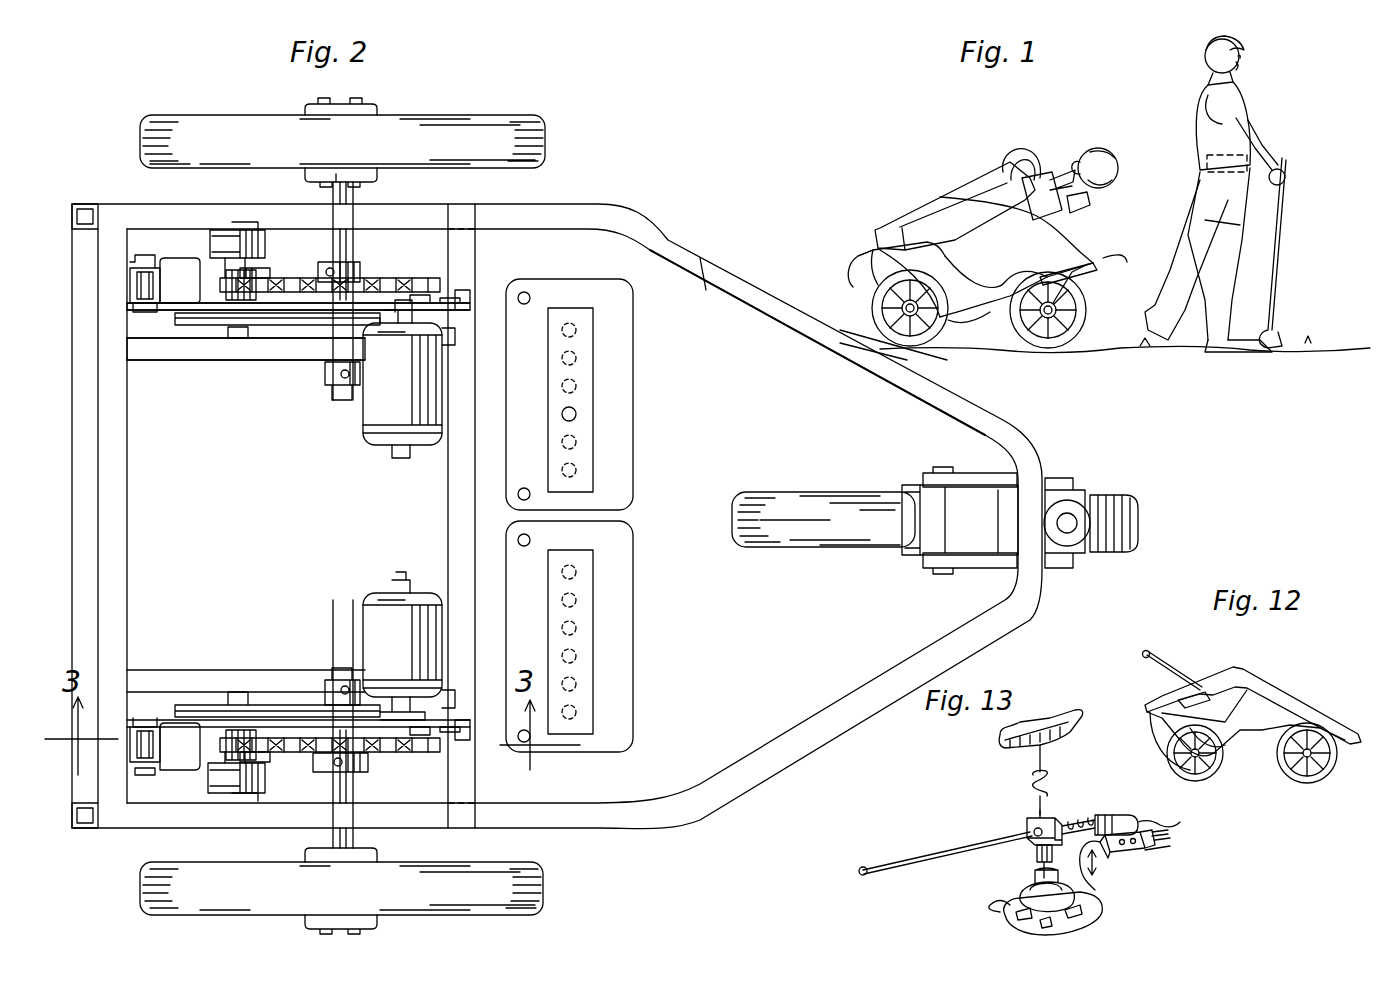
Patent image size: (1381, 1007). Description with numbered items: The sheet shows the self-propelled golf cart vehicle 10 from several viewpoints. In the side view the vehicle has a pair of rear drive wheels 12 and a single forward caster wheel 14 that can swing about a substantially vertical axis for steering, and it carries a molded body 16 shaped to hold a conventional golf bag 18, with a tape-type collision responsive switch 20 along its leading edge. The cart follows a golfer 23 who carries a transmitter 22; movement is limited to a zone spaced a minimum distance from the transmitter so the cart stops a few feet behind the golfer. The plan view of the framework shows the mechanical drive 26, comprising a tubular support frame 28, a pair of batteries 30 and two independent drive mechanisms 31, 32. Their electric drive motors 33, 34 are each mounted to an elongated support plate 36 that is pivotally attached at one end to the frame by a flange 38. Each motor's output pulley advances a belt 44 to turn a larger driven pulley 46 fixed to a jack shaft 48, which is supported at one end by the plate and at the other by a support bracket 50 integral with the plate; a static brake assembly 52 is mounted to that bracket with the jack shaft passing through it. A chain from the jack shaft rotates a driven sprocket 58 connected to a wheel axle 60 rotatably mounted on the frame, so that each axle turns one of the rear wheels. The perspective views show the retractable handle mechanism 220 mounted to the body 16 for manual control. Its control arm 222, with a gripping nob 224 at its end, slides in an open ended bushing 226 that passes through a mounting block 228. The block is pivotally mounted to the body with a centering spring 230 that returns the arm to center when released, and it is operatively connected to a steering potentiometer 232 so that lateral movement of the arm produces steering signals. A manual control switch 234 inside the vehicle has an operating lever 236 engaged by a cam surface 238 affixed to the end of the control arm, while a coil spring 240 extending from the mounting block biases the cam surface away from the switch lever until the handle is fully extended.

In FIG. 1, the self-propelled golf cart vehicle 10 is at (931, 182).
In FIG. 2, the rear drive wheels 12 is at (452, 128).
In FIG. 1, the rear drive wheels 12 is at (930, 342).
In FIG. 2, the forward caster wheel 14 is at (780, 530).
In FIG. 1, the forward caster wheel 14 is at (1040, 347).
In FIG. 1, the body 16 is at (1058, 226).
In FIG. 12, the body 16 is at (1298, 698).
In FIG. 13, the body 16 is at (1002, 735).
In FIG. 1, the golf bag 18 is at (1040, 176).
In FIG. 1, the collision responsive switch 20 is at (1088, 270).
In FIG. 1, the transmitter 22 is at (1207, 165).
In FIG. 1, the golfer 23 is at (1180, 97).
In FIG. 2, the mechanical drive 26 is at (653, 191).
In FIG. 2, the tubular support frame 28 is at (817, 342).
In FIG. 2, the batteries 30 is at (620, 540).
In FIG. 2, the drive mechanism 31 is at (347, 431).
In FIG. 2, the drive mechanism 32 is at (338, 570).
In FIG. 2, the electric drive motor 33 is at (422, 445).
In FIG. 2, the electric drive motor 34 is at (418, 593).
In FIG. 2, the elongated support plate 36 is at (170, 310).
In FIG. 2, the flange 38 is at (130, 271).
In FIG. 2, the belt 44 is at (318, 318).
In FIG. 2, the driven pulley 46 is at (215, 325).
In FIG. 2, the jack shaft 48 is at (250, 275).
In FIG. 2, the support bracket 50 is at (180, 266).
In FIG. 2, the static brake assembly 52 is at (265, 246).
In FIG. 2, the driven sprocket 58 is at (375, 280).
In FIG. 2, the wheel axle 60 is at (333, 192).
In FIG. 13, the retractable handle mechanism 220 is at (980, 806).
In FIG. 12, the control arm 222 is at (1210, 646).
In FIG. 13, the control arm 222 is at (950, 880).
In FIG. 12, the gripping nob 224 is at (1143, 658).
In FIG. 13, the gripping nob 224 is at (831, 884).
In FIG. 13, the open ended bushing 226 is at (1035, 850).
In FIG. 13, the mounting block 228 is at (1028, 820).
In FIG. 13, the centering spring 230 is at (1028, 775).
In FIG. 13, the steering potentiometer 232 is at (1075, 898).
In FIG. 13, the manual control switch 234 is at (1140, 855).
In FIG. 13, the operating lever 236 is at (1113, 873).
In FIG. 13, the cam surface 238 is at (963, 915).
In FIG. 13, the coil spring 240 is at (1076, 818).